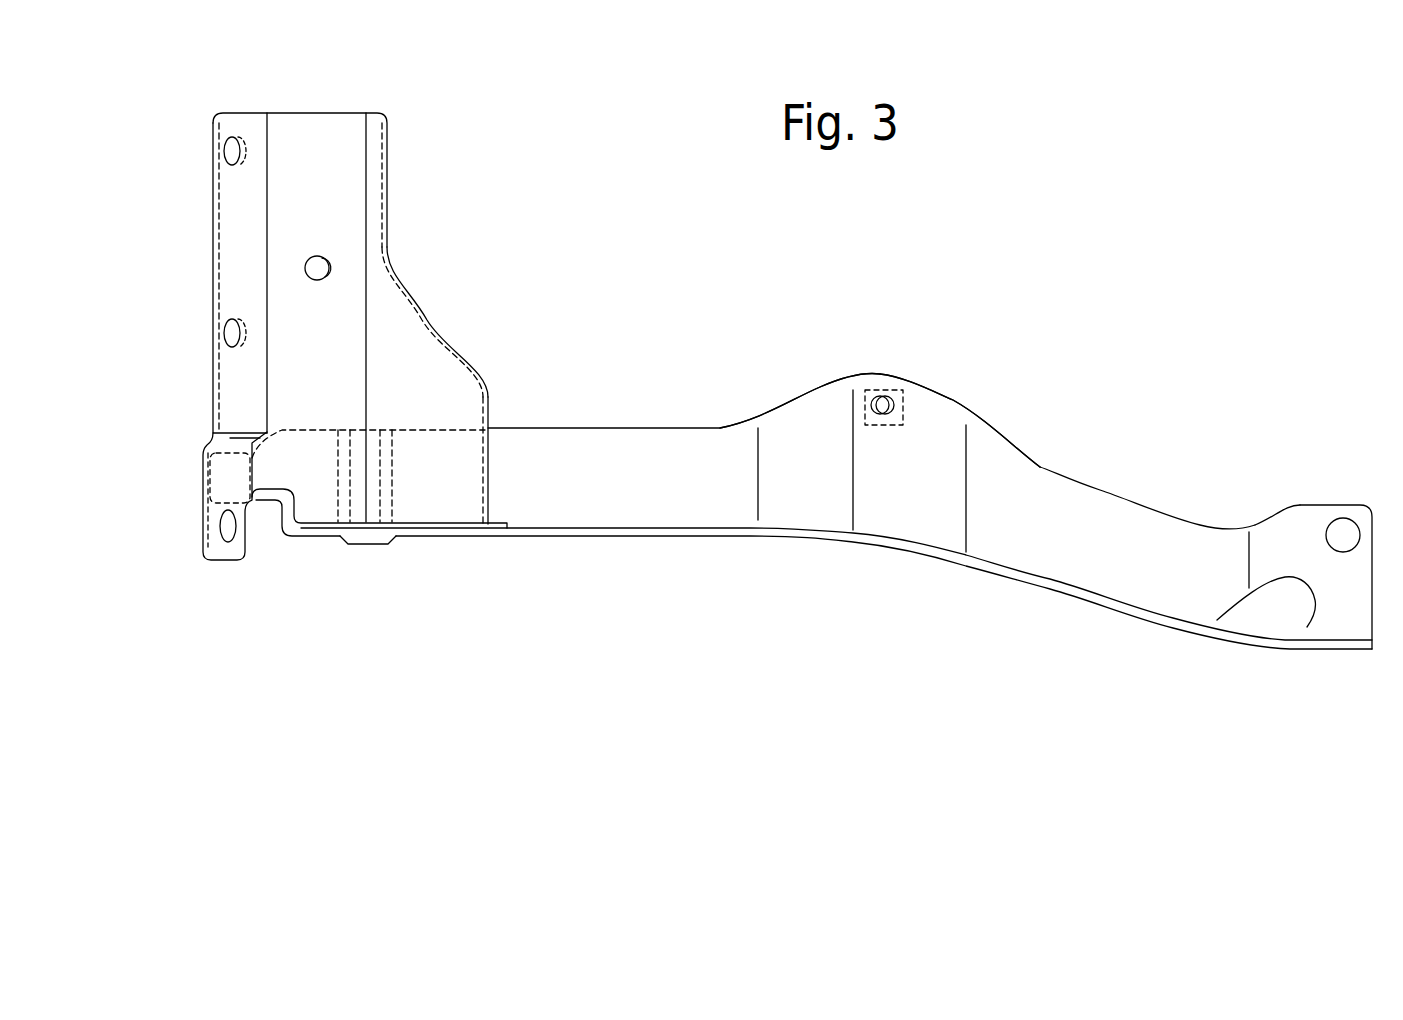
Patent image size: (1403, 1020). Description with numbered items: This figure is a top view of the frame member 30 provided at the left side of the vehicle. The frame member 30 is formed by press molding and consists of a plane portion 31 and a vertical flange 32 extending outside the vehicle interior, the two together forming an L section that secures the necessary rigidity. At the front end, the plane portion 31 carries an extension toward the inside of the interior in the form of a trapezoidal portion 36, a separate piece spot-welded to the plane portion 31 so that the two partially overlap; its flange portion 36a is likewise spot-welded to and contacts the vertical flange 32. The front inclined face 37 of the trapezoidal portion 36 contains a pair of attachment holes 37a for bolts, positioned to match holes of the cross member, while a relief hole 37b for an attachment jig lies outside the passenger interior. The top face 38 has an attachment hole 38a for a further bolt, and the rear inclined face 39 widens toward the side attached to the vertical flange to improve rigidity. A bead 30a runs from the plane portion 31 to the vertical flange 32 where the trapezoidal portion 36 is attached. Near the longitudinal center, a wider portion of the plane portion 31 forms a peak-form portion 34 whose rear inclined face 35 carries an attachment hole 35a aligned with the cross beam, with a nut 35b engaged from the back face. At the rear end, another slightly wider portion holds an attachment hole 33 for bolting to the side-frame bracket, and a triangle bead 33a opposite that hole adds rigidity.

The frame member 30 is at (1035, 408).
The bead 30a is at (368, 546).
The plane portion 31 is at (1132, 533).
The vertical flange 32 is at (1177, 618).
The attachment hole 33 is at (1343, 517).
The triangle bead 33a is at (1313, 607).
The peak-form portion 34 is at (827, 423).
The sloped portion 35 is at (930, 420).
The attachment hole 35a is at (892, 397).
The nut 35b is at (870, 385).
The trapezoidal portion 36 is at (360, 185).
The flange portion 36a is at (462, 520).
The front inclined face 37 is at (230, 230).
The attachment holes 37a is at (220, 150).
The relief hole 37b is at (228, 547).
The top face 38 is at (335, 238).
The attachment hole 38a is at (328, 278).
The rear inclined face 39 is at (445, 377).